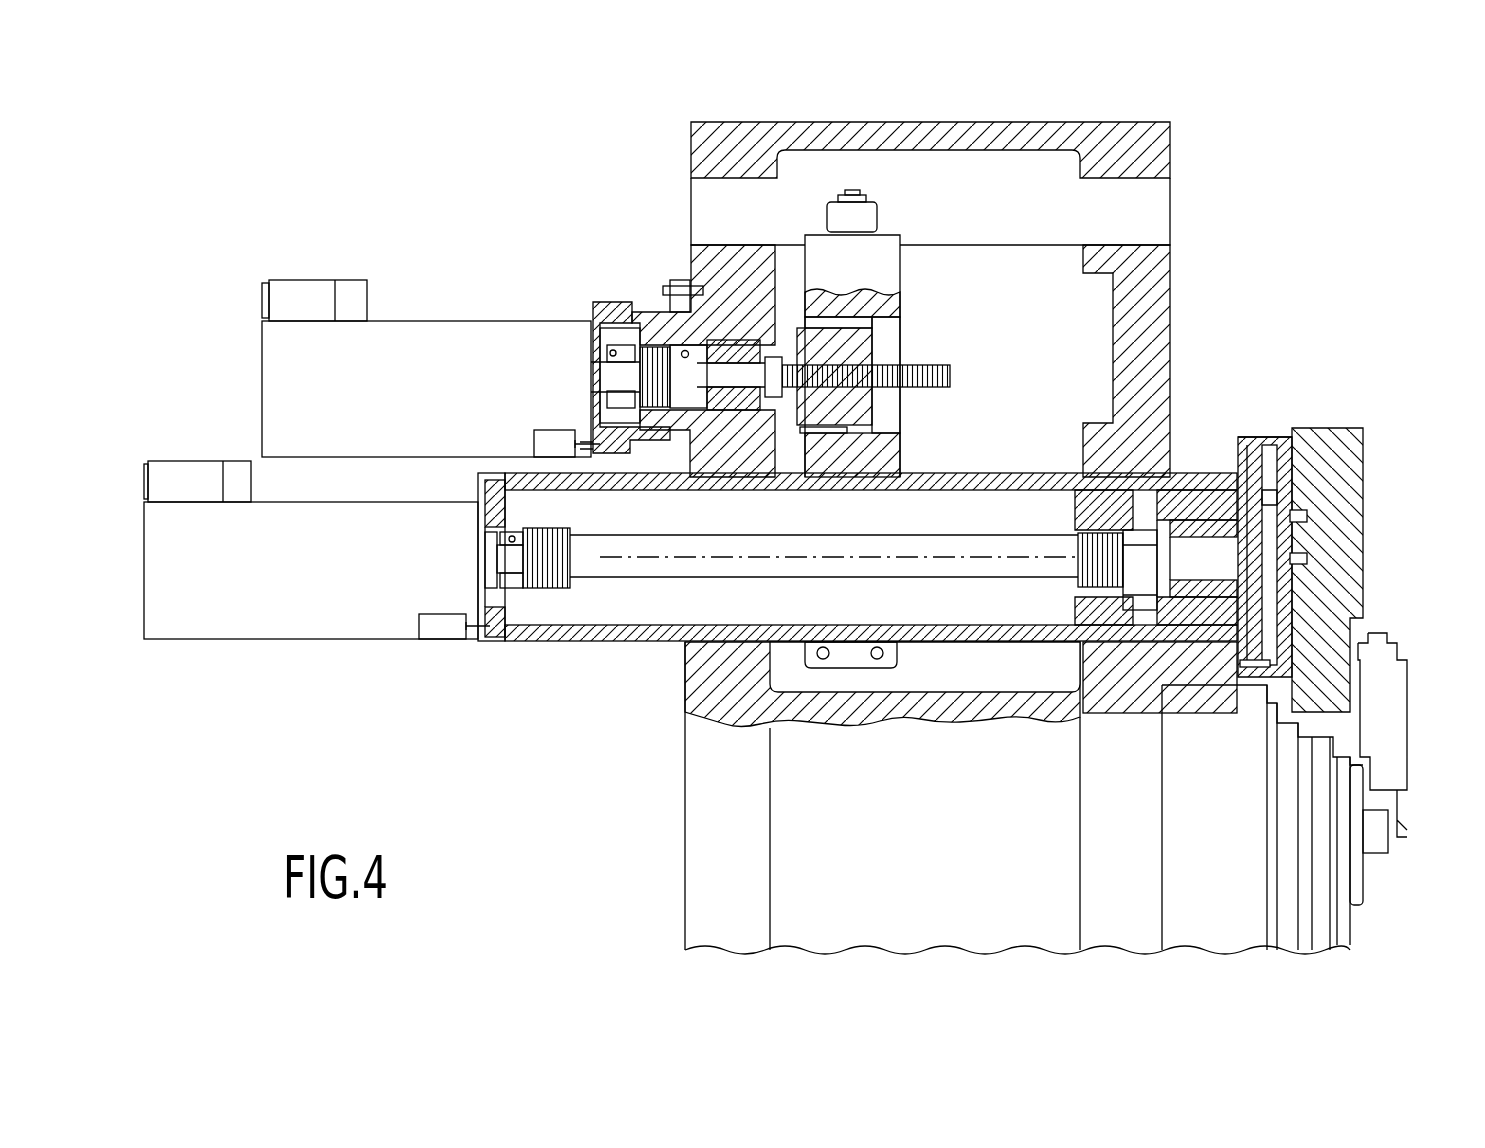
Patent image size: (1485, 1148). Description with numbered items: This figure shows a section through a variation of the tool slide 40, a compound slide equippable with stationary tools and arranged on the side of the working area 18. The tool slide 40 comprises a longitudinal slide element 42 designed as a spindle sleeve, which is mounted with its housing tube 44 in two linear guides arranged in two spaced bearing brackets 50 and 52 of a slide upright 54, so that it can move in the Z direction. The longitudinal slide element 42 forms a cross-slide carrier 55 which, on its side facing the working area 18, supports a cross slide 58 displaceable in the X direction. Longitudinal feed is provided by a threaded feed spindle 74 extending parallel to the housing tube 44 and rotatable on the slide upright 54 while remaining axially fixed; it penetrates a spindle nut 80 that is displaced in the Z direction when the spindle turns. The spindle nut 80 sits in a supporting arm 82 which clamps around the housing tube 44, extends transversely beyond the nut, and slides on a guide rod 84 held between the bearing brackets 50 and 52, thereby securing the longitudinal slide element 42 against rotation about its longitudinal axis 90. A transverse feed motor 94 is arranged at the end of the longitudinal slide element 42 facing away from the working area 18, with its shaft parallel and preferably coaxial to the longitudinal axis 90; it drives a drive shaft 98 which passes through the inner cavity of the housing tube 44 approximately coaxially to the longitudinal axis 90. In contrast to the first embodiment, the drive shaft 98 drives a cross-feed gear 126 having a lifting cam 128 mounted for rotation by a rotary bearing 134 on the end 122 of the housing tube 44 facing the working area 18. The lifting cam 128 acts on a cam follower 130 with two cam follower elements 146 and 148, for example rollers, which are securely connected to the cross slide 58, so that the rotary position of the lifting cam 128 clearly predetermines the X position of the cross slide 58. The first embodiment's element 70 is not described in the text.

The working area 18 is at (1447, 642).
The tool slide 40 is at (928, 650).
The longitudinal slide element 42 is at (500, 646).
The housing tube 44 is at (563, 633).
The bearing bracket 50 is at (700, 262).
The bearing bracket 52 is at (1156, 312).
The slide upright 54 is at (1076, 116).
The cross-slide carrier 55 is at (1262, 428).
The cross slide 58 is at (1345, 478).
The motor 70 is at (437, 340).
The threaded feed spindle 74 is at (935, 362).
The spindle nut 80 is at (868, 408).
The supporting arm 82 is at (892, 461).
The guide rod 84 is at (1150, 202).
The longitudinal axis 90 is at (637, 560).
The transverse feed motor 94 is at (350, 620).
The drive shaft 98 is at (697, 577).
The end of the housing tube 122 is at (1160, 650).
The cross-feed gear 126 is at (1302, 535).
The lifting cam 128 is at (1257, 490).
The cam follower 130 is at (1245, 565).
The rotary bearing 134 is at (1250, 545).
The cam follower element 146 is at (1268, 497).
The cam follower element 148 is at (1292, 573).